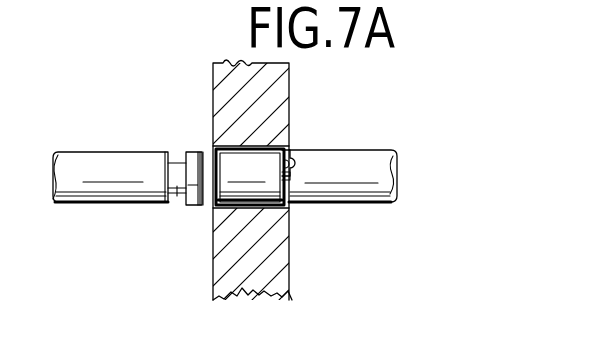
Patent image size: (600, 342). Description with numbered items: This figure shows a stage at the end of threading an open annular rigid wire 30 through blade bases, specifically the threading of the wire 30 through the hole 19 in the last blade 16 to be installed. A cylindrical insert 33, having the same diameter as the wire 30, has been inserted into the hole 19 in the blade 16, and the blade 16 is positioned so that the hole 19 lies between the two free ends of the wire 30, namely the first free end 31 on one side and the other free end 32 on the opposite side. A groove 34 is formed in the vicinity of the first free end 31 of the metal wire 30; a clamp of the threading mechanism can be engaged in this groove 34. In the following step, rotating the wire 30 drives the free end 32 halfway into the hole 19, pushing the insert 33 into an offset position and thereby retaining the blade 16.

The blade 16 is at (268, 93).
The hole 19 is at (292, 156).
The wire 30 is at (103, 180).
The first free end 31 is at (205, 150).
The free end 32 is at (288, 178).
The cylindrical insert 33 is at (262, 187).
The groove 34 is at (178, 193).